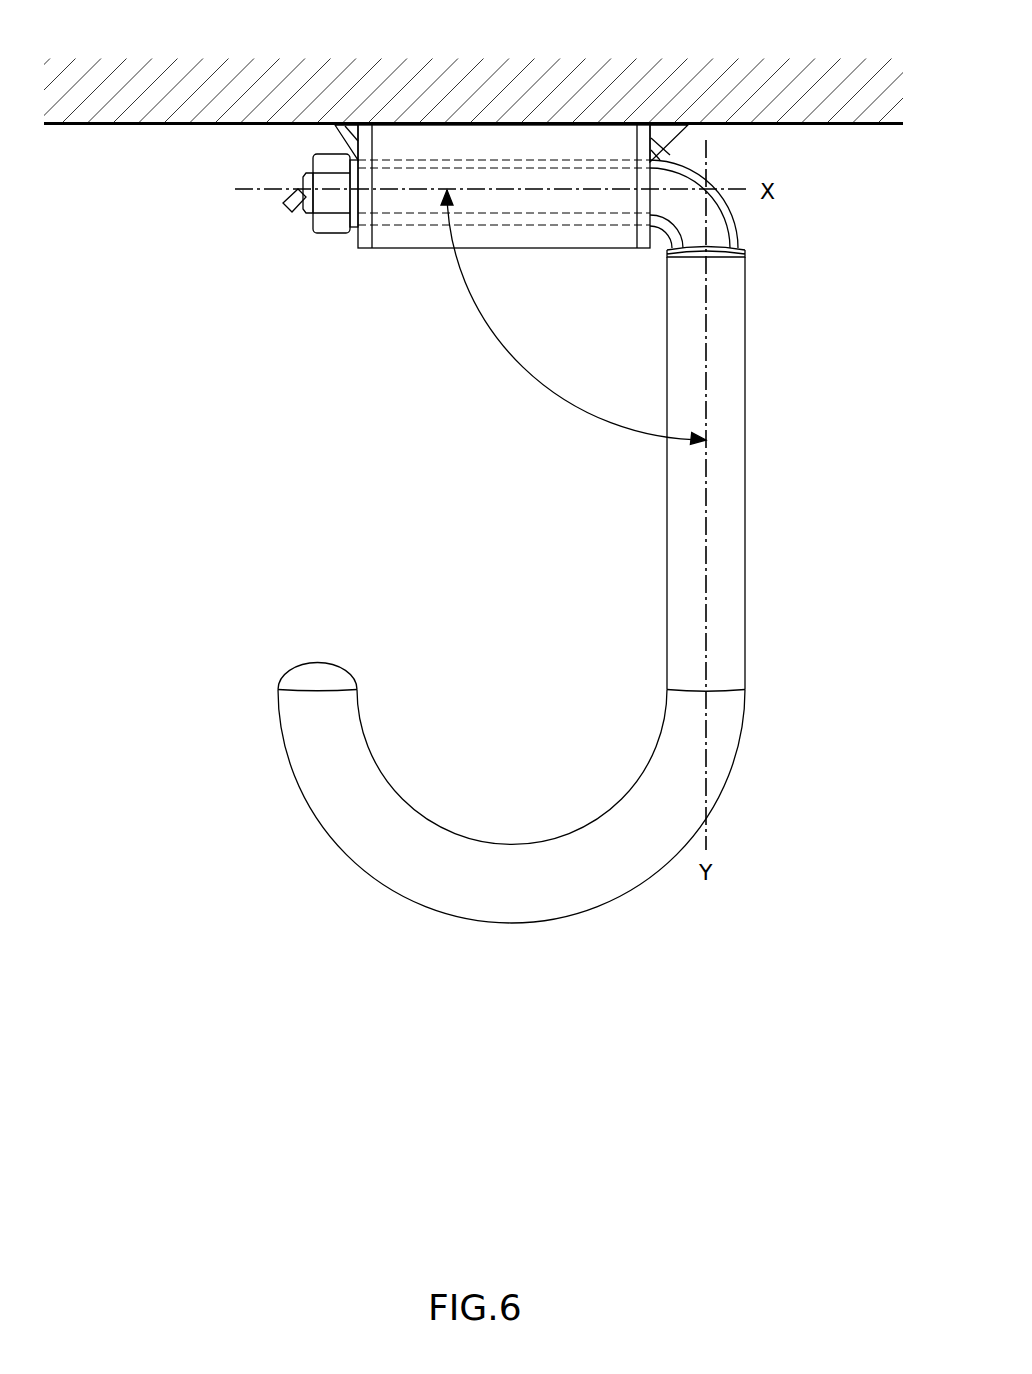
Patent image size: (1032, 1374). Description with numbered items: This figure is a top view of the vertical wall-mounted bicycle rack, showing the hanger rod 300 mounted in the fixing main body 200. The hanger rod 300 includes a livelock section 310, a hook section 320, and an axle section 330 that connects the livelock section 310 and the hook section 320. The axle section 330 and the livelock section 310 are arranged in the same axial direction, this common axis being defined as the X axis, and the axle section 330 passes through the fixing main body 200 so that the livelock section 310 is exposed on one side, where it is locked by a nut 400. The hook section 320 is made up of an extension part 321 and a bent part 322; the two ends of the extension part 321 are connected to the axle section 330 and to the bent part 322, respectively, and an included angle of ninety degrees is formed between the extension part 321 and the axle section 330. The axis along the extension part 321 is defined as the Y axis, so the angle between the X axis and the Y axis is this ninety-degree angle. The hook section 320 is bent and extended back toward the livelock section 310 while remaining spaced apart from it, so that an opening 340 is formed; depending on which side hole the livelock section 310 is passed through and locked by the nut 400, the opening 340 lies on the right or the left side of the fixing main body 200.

The fixing main body 200 is at (408, 250).
The hanger rod 300 is at (519, 523).
The livelock section 310 is at (306, 214).
The hook section 320 is at (430, 908).
The extension part 321 is at (745, 526).
The bent part 322 is at (498, 917).
The axle section 330 is at (460, 158).
The opening 340 is at (308, 533).
The nut 400 is at (333, 232).